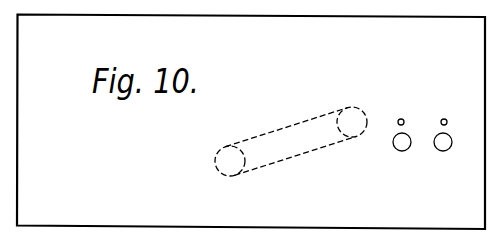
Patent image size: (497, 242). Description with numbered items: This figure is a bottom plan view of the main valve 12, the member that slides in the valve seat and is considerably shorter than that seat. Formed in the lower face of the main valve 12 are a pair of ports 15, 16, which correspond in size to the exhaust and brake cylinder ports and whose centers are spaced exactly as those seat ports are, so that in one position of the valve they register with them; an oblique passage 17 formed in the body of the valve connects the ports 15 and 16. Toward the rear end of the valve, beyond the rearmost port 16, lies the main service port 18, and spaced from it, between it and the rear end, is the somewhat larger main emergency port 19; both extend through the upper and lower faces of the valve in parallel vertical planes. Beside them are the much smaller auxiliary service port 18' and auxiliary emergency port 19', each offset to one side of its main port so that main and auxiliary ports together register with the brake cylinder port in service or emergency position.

The main valve 12 is at (152, 168).
The port 15 is at (237, 147).
The port 16 is at (353, 106).
The oblique passage 17 is at (292, 125).
The main service port 18 is at (397, 159).
The auxiliary service port 18' is at (414, 100).
The main emergency port 19 is at (439, 159).
The auxiliary emergency port 19' is at (457, 101).